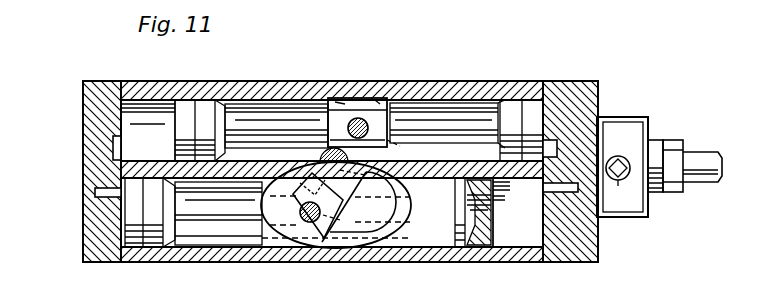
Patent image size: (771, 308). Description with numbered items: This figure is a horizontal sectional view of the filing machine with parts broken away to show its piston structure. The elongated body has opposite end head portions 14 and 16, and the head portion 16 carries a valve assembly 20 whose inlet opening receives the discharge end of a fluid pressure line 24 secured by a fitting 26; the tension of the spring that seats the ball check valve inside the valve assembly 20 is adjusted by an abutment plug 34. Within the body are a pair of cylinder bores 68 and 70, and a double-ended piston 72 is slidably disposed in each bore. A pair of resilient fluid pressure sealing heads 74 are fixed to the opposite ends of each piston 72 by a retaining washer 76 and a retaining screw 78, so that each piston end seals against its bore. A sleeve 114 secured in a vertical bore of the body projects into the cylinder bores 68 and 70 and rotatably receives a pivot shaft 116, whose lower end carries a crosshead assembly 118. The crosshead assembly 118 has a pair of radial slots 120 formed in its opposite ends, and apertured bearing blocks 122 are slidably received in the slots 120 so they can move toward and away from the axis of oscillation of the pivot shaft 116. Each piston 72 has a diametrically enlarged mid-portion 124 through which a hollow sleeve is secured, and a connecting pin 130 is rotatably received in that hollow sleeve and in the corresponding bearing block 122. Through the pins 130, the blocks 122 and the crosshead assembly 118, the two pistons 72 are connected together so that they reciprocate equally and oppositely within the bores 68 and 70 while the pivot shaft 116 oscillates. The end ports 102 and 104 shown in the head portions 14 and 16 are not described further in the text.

The head portion 14 is at (113, 72).
The head portion 16 is at (572, 75).
The valve assembly 20 is at (646, 110).
The fluid pressure line 24 is at (704, 152).
The fitting 26 is at (672, 140).
The abutment plug 34 is at (618, 181).
The cylinder bore 68 is at (507, 248).
The cylinder bore 70 is at (165, 100).
The double-ended piston 72 is at (270, 125).
The sealing head 74 is at (528, 100).
The retaining washer 76 is at (500, 184).
The retaining screw 78 is at (495, 198).
The port 102 is at (110, 142).
The port 104 is at (95, 193).
The sleeve 114 is at (322, 156).
The pivot shaft 116 is at (362, 207).
The crosshead assembly 118 is at (372, 182).
The radial slot 120 is at (400, 146).
The bearing block 122 is at (378, 120).
The diametrically enlarged mid-portion 124 is at (347, 102).
The connecting pin 130 is at (311, 223).